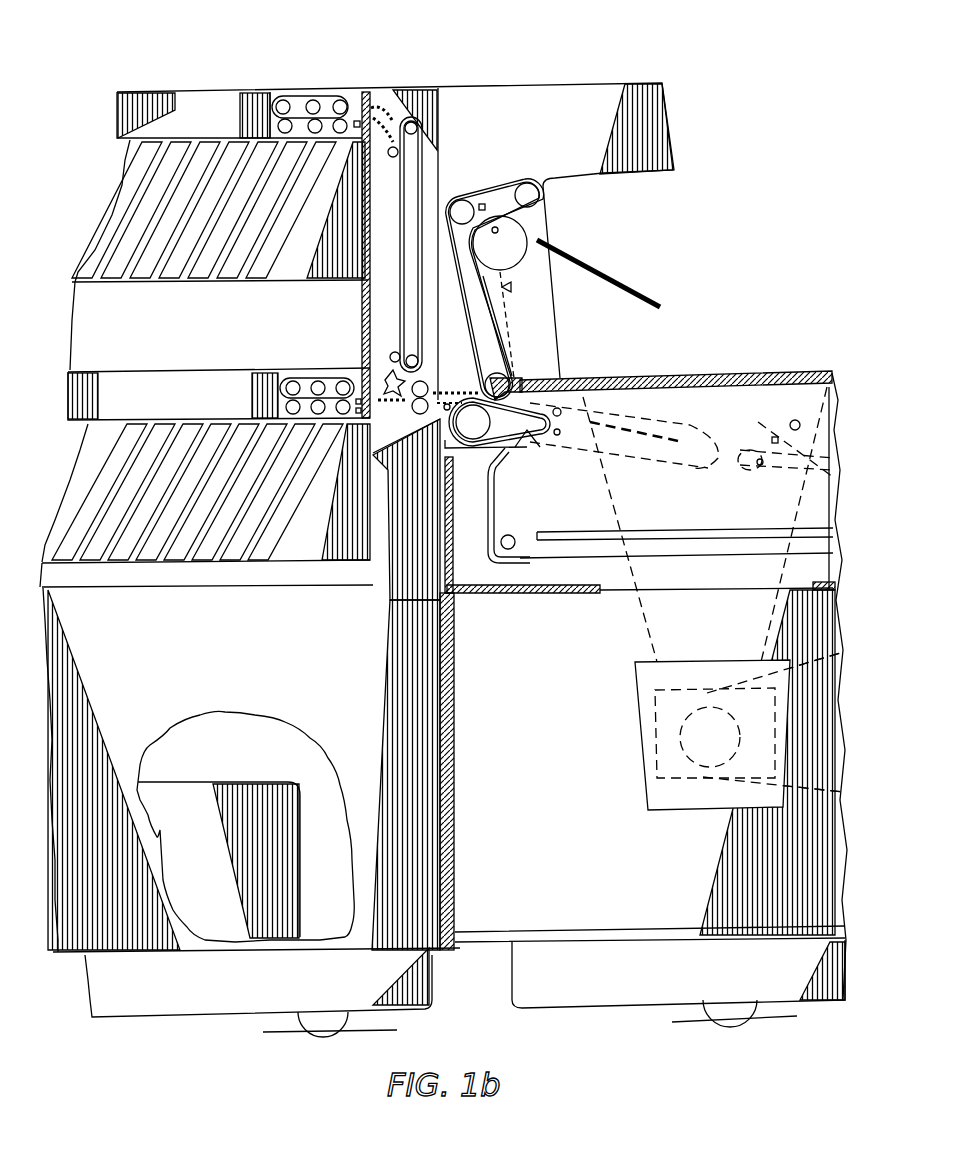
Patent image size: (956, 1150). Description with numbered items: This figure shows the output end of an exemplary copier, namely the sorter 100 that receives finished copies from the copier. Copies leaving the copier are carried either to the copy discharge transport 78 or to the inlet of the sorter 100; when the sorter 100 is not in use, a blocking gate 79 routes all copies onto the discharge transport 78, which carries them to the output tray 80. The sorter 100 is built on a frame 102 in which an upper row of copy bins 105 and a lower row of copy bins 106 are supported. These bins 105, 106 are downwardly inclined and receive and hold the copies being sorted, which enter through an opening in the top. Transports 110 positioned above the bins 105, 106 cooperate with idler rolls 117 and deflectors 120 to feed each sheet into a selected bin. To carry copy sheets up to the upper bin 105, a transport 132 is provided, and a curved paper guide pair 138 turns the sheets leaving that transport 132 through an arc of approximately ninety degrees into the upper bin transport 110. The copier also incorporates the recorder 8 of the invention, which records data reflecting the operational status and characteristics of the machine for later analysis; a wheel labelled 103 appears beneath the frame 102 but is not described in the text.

The sorter 100 is at (240, 68).
The transports 110 is at (299, 86).
The curved paper guide pair 138 is at (390, 116).
The transport 132 is at (428, 161).
The idler rolls 117 is at (360, 151).
The deflectors 120 is at (293, 122).
The upper copy bins 105 is at (108, 186).
The lower copy bins 106 is at (62, 453).
The copy discharge transport 78 is at (494, 327).
The output tray 80 is at (670, 290).
The blocking gate 79 is at (528, 447).
The frame 102 is at (132, 644).
The recorder 8 is at (268, 782).
The wheel 103 is at (340, 1020).